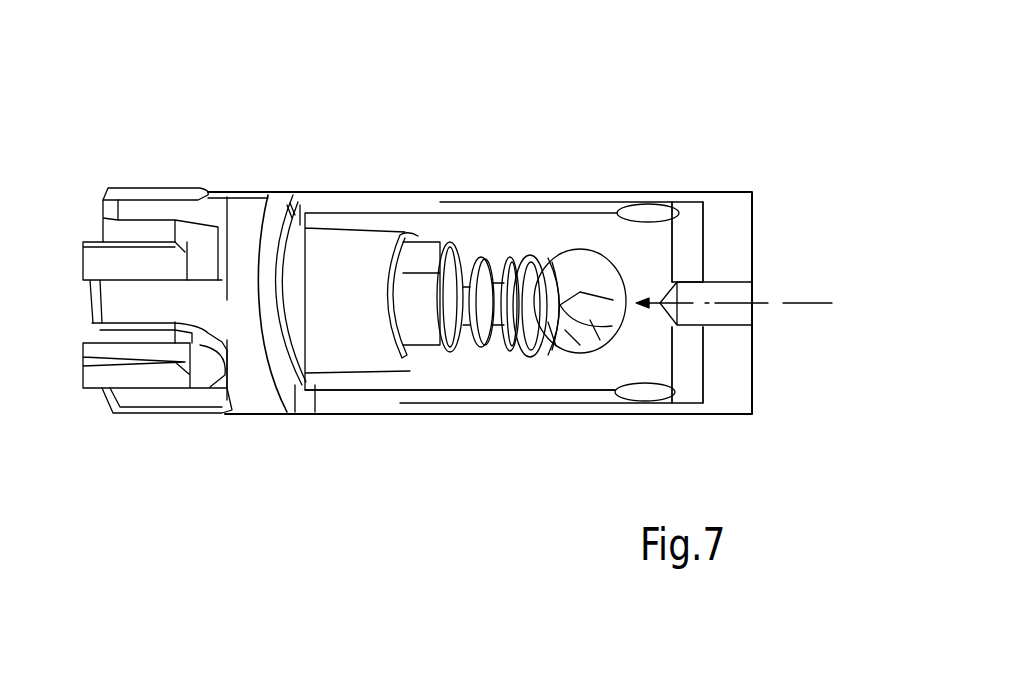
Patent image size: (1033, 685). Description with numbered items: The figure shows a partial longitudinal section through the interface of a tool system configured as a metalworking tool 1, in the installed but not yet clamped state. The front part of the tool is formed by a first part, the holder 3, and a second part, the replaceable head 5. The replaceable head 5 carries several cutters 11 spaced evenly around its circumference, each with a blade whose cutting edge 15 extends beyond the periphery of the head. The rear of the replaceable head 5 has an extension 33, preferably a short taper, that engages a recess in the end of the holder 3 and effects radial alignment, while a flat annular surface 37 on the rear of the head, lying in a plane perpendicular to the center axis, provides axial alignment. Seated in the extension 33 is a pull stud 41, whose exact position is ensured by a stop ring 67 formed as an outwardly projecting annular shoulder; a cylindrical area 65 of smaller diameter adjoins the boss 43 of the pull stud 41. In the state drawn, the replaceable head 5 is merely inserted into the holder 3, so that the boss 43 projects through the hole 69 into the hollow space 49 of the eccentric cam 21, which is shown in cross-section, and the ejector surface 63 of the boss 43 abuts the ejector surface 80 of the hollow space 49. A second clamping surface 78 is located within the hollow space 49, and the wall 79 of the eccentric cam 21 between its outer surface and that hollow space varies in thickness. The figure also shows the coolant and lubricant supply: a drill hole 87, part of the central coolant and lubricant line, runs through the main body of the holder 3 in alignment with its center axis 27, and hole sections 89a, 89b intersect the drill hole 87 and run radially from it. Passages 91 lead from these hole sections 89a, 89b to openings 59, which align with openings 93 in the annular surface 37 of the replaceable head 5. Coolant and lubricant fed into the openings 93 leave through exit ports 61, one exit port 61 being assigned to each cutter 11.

The metalworking tool 1 is at (310, 132).
The holder 3 is at (727, 190).
The replaceable head 5 is at (240, 188).
The cutter 11 is at (122, 207).
The cutting edge 15 is at (85, 243).
The eccentric cam 21 is at (617, 213).
The center axis 27 is at (823, 303).
The extension 33 is at (333, 303).
The annular surface 37 is at (298, 205).
The pull stud 41 is at (467, 250).
The boss 43 is at (517, 253).
The hollow space 49 is at (558, 262).
The opening 59 is at (303, 228).
The exit port 61 is at (222, 245).
The ejector surface 63 is at (548, 272).
The cylindrical area 65 is at (492, 255).
The stop ring 67 is at (443, 247).
The hole 69 is at (538, 262).
The second clamping surface 78 is at (572, 347).
The wall 79 is at (540, 353).
The ejector surface 80 is at (583, 258).
The drill hole 87 is at (730, 290).
The hole section 89a is at (680, 243).
The hole section 89b is at (680, 370).
The passage 91 is at (352, 400).
The opening 93 is at (263, 214).